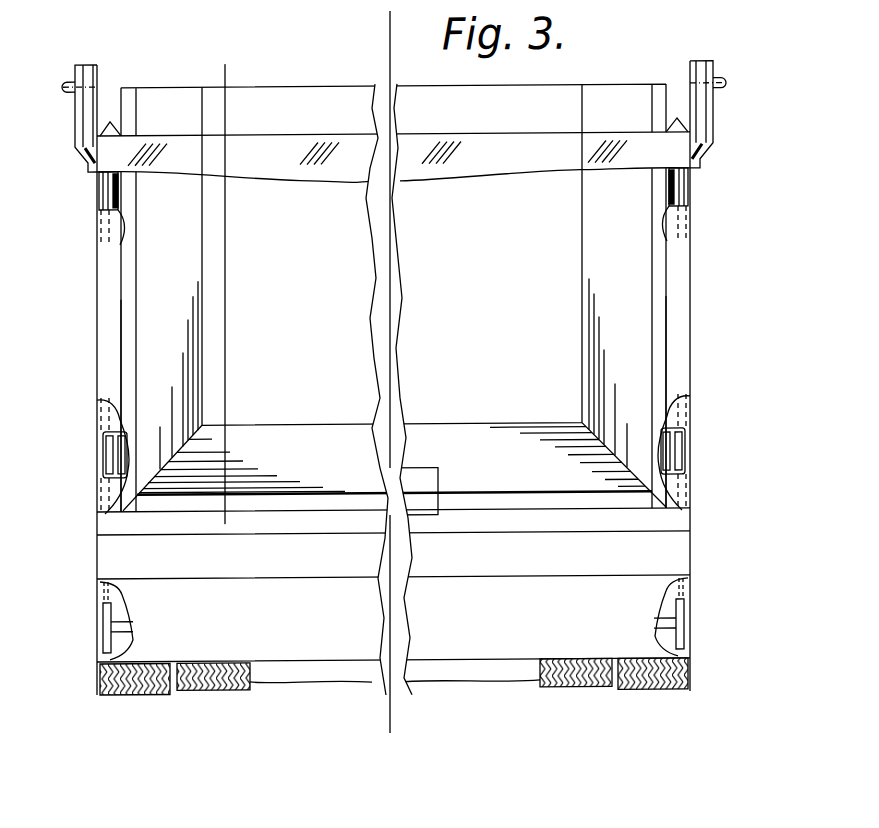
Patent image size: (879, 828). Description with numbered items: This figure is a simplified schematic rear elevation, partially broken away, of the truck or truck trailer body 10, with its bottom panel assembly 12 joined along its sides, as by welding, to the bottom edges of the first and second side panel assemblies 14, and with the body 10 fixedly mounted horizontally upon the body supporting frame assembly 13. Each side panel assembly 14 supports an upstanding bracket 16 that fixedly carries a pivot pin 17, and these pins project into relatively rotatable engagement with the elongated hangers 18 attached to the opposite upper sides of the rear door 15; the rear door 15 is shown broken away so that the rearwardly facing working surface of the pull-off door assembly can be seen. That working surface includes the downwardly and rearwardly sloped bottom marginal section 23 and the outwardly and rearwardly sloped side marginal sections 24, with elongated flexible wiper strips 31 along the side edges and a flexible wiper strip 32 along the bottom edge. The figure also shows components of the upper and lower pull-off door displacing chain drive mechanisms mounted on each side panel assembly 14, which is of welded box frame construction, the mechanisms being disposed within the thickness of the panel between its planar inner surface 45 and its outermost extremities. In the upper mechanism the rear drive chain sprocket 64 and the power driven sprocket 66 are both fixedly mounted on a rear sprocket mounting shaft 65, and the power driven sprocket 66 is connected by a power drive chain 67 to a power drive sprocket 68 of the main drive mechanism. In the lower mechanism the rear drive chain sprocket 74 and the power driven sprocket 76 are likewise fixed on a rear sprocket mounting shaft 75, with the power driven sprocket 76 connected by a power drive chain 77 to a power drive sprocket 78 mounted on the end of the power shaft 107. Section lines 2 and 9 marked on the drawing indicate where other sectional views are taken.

The section line 2— 2 is at (225, 77).
The section line 9— 9 is at (389, 27).
The truck or truck trailer body 10 is at (421, 87).
The bottom panel assembly 12 is at (692, 522).
The body supporting frame assembly 13 is at (692, 561).
The side panel assembly 14 is at (96, 352).
The rear door 15 is at (300, 142).
The upstanding bracket 16 is at (98, 73).
The pivot pin 17 is at (66, 84).
The elongated hanger 18 is at (80, 138).
The bottom marginal section 23 is at (344, 423).
The side marginal section 24 is at (134, 252).
The flexible wiper strip 31 is at (130, 300).
The flexible wiper strip 32 is at (333, 503).
The planar inner surface 45 is at (118, 378).
The rear drive chain sprocket 64 is at (105, 200).
The rear sprocket mounting shaft 65 is at (112, 190).
The power driven sprocket 66 is at (100, 183).
The power drive chain 67 is at (102, 228).
The power drive sprocket 68 is at (100, 628).
The rear drive chain sprocket 74 is at (108, 462).
The rear sprocket mounting shaft 75 is at (127, 457).
The power driven sprocket 76 is at (102, 440).
The power drive chain 77 is at (102, 500).
The power drive sprocket 78 is at (103, 615).
The power shaft 107 is at (103, 650).